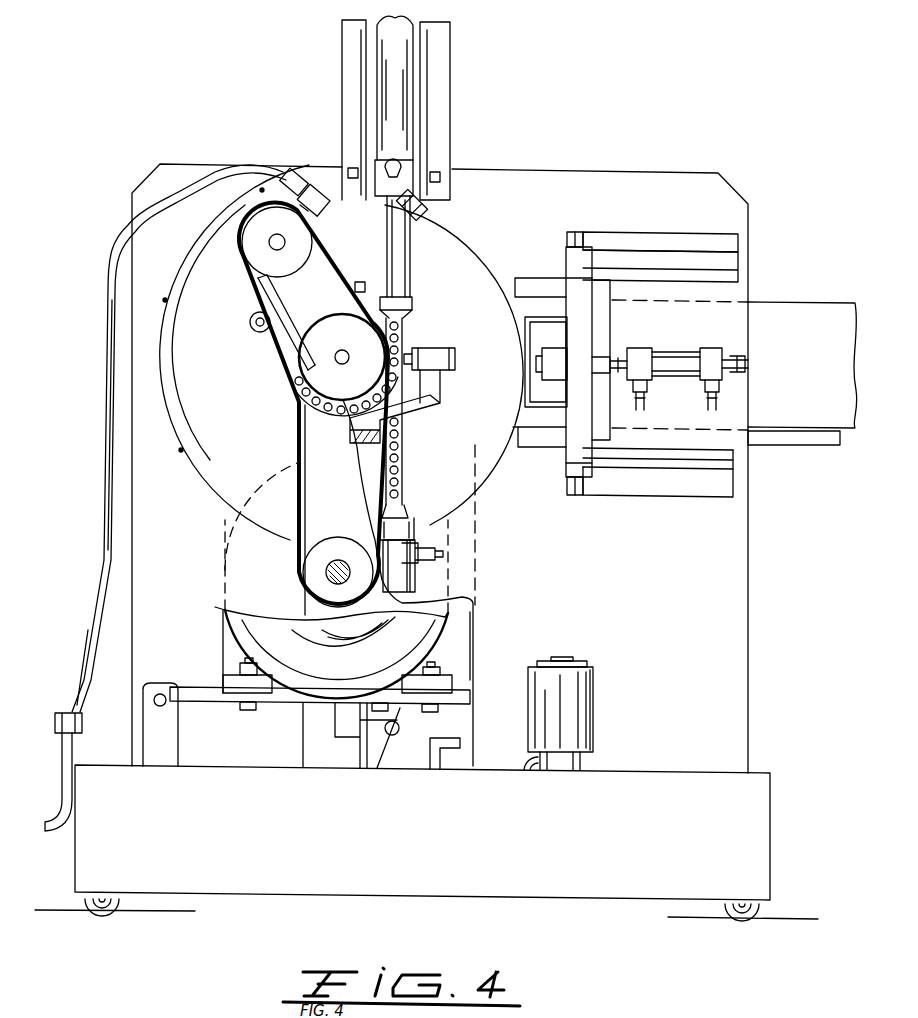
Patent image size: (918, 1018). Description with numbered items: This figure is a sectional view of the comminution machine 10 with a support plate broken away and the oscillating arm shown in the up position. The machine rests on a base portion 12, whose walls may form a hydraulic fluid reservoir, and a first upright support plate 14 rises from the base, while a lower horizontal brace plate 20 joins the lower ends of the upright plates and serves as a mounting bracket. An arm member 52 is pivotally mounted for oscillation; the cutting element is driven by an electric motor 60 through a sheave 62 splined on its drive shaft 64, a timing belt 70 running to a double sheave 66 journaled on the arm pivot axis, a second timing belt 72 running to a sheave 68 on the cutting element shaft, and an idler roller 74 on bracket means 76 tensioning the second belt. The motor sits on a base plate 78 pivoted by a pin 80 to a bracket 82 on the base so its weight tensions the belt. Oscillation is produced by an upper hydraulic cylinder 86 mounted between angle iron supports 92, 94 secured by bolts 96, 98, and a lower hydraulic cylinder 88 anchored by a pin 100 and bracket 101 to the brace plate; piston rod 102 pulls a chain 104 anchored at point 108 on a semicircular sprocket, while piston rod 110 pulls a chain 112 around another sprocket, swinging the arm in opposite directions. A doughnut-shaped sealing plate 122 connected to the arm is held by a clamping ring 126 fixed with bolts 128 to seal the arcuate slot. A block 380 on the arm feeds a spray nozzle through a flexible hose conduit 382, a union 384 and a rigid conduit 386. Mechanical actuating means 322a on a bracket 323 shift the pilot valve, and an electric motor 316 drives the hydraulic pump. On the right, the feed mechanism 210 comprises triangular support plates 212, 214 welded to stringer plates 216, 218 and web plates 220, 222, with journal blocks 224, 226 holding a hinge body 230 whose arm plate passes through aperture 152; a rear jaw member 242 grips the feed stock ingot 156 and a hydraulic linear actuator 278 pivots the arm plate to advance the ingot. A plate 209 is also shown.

The comminution machine 10 is at (203, 150).
The base portion 12 is at (80, 855).
The first upright support plate 14 is at (742, 676).
The lower horizontal brace plate 20 is at (352, 769).
The arm member 52 is at (270, 282).
The electric motor 60 is at (233, 617).
The sheave 62 is at (302, 565).
The drive shaft 64 is at (326, 575).
The double sheave 66 is at (334, 328).
The sheave 68 is at (252, 251).
The timing belt 70 is at (303, 455).
The second timing belt 72 is at (270, 296).
The idler roller 74 is at (249, 326).
The bracket means 76 is at (284, 314).
The base plate 78 is at (298, 705).
The pin 80 is at (162, 694).
The bracket 82 is at (170, 737).
The upper hydraulic cylinder 86 is at (400, 93).
The lower hydraulic cylinder 88 is at (416, 578).
The angle iron support 92 is at (440, 130).
The angle iron support 94 is at (348, 110).
The bolt 96 is at (441, 174).
The bolt 98 is at (342, 172).
The pin 100 is at (400, 728).
The bracket 101 is at (403, 738).
The piston rod 102 is at (404, 242).
The chain 104 is at (402, 340).
The anchor point 108 is at (298, 402).
The piston rod 110 is at (408, 502).
The chain 112 is at (406, 460).
The doughnut-shaped sealing plate 122 is at (462, 250).
The clamping ring 126 is at (296, 170).
The bolts 128 is at (188, 252).
The aperture 152 is at (556, 440).
The feed stock ingot 156 is at (788, 308).
The plate 209 is at (790, 446).
The feed mechanism 210 is at (624, 505).
The right-triangularly shaped support plate 212 is at (645, 462).
The right-triangularly shaped support plate 214 is at (682, 264).
The stringer plate 216 is at (718, 490).
The stringer plate 218 is at (658, 244).
The web plate 220 is at (580, 496).
The web plate 222 is at (582, 236).
The journal block 224 is at (570, 470).
The journal block 226 is at (566, 256).
The hinge body 230 is at (586, 340).
The rear jaw member 242 is at (542, 352).
The hydraulic linear actuator 278 is at (668, 356).
The electric motor 316 is at (570, 723).
The mechanical actuating means 322a is at (446, 352).
The bracket 323 is at (414, 414).
The block 380 is at (305, 208).
The flexible hose conduit 382 is at (124, 230).
The union 384 is at (72, 716).
The rigid conduit 386 is at (72, 752).